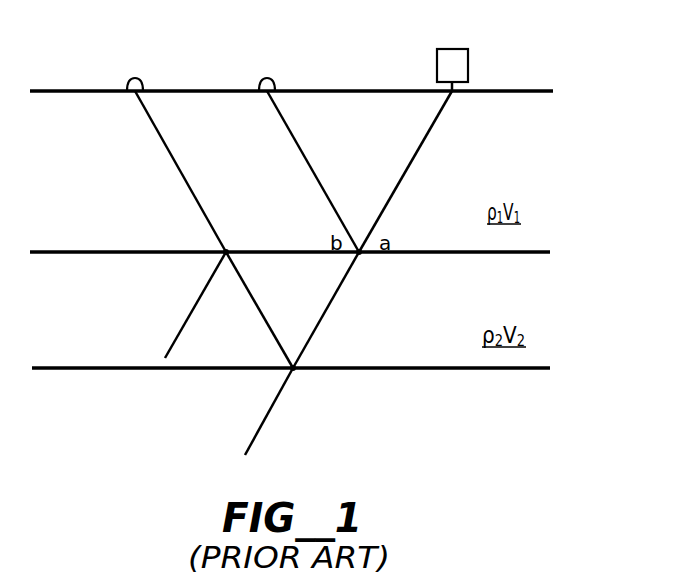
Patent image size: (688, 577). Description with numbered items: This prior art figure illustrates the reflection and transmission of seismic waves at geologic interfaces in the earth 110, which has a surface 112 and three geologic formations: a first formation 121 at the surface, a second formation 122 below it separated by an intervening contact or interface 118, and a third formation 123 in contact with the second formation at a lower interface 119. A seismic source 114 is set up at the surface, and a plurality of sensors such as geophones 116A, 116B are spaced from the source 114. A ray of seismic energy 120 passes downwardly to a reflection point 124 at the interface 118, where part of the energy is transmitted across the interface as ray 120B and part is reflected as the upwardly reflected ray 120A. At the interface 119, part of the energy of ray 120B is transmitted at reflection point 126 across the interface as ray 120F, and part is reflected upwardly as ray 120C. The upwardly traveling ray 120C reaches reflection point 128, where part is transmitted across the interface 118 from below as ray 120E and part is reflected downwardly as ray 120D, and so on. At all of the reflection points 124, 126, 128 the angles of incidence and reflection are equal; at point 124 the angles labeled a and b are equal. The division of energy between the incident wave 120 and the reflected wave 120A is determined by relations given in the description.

The earth 110 is at (372, 134).
The surface 112 is at (366, 89).
The seismic source 114 is at (469, 63).
The geophone 116A is at (262, 78).
The geophone 116B is at (130, 78).
The interface 118 is at (494, 254).
The interface 119 is at (494, 370).
The ray of seismic energy 120 is at (411, 163).
The upwardly reflected ray 120A is at (300, 150).
The transmitted ray 120B is at (322, 318).
The reflected ray 120C is at (257, 305).
The downwardly reflected ray 120D is at (188, 321).
The transmitted ray 120E is at (195, 200).
The transmitted ray 120F is at (259, 430).
The geologic formation 121 is at (78, 184).
The geologic formation 122 is at (81, 329).
The geologic formation 123 is at (81, 437).
The reflection point 124 is at (360, 256).
The reflection point 126 is at (295, 372).
The reflection point 128 is at (229, 250).